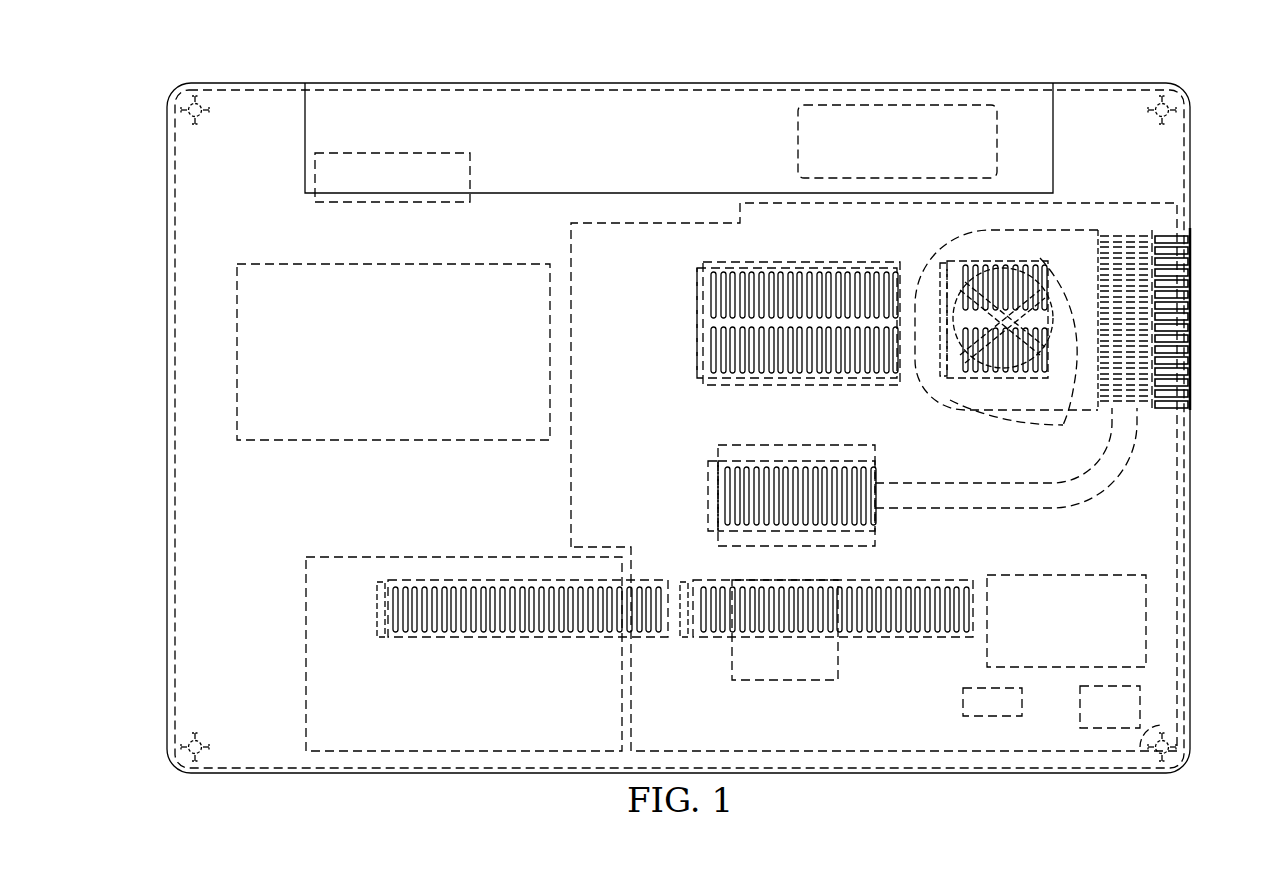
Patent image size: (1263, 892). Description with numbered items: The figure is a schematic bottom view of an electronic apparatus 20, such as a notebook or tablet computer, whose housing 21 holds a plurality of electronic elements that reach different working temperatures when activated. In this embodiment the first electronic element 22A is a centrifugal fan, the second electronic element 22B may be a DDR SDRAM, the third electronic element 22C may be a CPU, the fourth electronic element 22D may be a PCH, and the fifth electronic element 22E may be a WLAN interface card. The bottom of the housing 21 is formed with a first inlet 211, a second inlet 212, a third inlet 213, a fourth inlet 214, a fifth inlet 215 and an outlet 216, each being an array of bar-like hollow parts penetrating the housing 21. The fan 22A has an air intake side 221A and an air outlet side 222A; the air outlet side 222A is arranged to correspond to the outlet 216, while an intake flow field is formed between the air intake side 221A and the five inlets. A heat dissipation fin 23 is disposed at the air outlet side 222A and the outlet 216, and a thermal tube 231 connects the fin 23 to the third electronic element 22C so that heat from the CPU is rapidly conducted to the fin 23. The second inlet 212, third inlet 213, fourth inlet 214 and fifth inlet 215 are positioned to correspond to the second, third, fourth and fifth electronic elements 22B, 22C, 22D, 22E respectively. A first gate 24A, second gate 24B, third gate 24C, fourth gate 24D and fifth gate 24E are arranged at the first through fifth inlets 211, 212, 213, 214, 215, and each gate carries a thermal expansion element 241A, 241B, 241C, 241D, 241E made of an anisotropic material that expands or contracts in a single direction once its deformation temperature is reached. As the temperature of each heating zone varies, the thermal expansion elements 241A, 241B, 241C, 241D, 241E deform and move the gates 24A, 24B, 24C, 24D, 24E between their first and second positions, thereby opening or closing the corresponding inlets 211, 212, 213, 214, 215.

The electronic apparatus 20 is at (691, 72).
The housing 21 is at (1192, 133).
The first electronic element 22A is at (1025, 236).
The air outlet side 222A is at (1115, 230).
The heat dissipation fin 23 is at (1140, 230).
The outlet 216 is at (1186, 275).
The second inlet 212 is at (783, 278).
The first inlet 211 is at (963, 278).
The thermal expansion element 241B is at (697, 308).
The second gate 24B is at (725, 380).
The second electronic element 22B is at (790, 386).
The thermal expansion element 241A is at (945, 380).
The first gate 24A is at (960, 400).
The air intake side 221A is at (1070, 410).
The third inlet 213 is at (822, 470).
The thermal tube 231 is at (1105, 490).
The thermal expansion element 241C is at (708, 500).
The third gate 24C is at (780, 533).
The third electronic element 22C is at (850, 546).
The fifth electronic element 22E is at (306, 622).
The thermal expansion element 241E is at (380, 640).
The fifth gate 24E is at (483, 640).
The fifth inlet 215 is at (555, 636).
The thermal expansion element 241D is at (684, 640).
The fourth gate 24D is at (865, 640).
The fourth inlet 214 is at (912, 638).
The fourth electronic element 22D is at (790, 682).